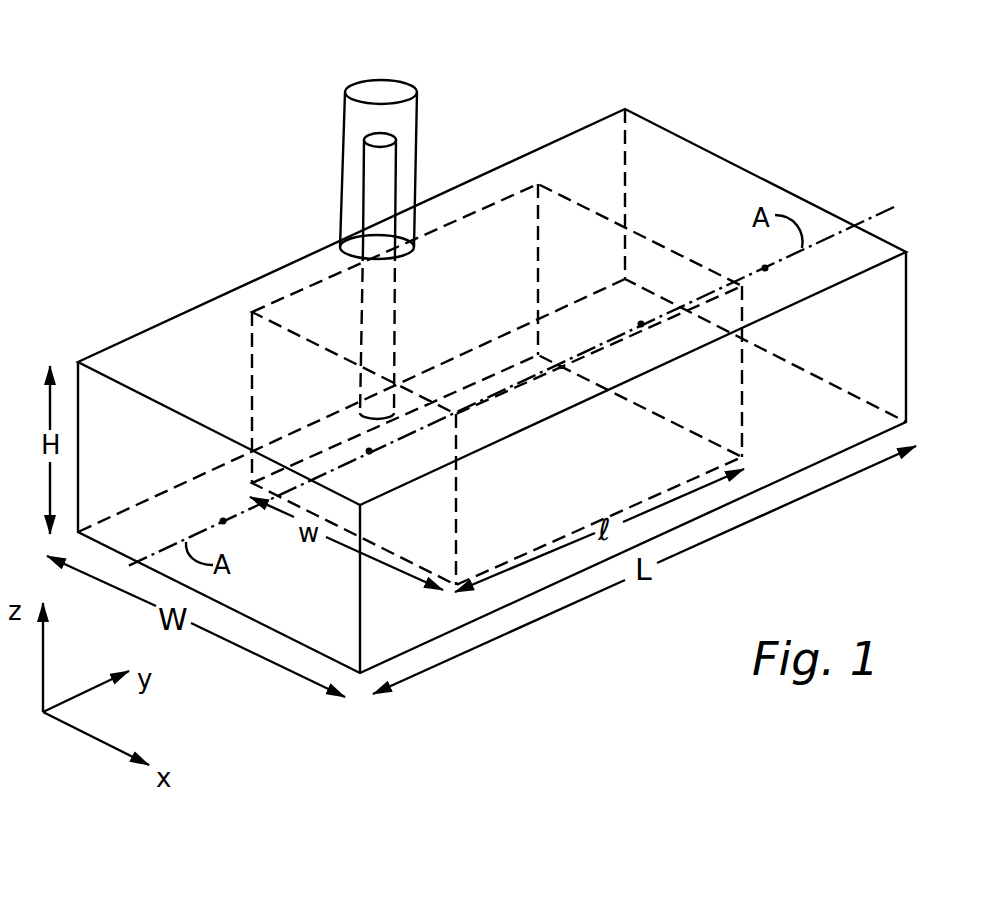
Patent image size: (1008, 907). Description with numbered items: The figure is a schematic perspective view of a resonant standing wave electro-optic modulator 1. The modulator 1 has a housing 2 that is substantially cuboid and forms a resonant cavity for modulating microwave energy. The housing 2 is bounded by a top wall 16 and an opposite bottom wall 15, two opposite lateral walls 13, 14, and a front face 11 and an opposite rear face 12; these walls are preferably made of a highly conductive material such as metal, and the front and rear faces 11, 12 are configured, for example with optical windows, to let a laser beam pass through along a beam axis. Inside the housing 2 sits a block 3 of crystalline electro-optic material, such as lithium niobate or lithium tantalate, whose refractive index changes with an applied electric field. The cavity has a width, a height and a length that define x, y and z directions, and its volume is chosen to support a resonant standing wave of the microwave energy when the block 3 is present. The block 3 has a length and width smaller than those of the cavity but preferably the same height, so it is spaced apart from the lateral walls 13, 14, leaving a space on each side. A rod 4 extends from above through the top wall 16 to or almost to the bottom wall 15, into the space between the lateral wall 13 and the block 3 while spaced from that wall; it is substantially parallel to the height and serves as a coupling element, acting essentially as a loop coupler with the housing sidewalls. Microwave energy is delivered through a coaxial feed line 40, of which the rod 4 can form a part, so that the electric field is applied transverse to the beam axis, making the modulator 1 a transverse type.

The resonant standing wave electro-optic modulator 1 is at (230, 161).
The housing 2 is at (759, 170).
The block of crystalline material 3 is at (506, 252).
The rod 4 is at (384, 172).
The coaxial feed line 40 is at (342, 116).
The front face 11 is at (284, 593).
The rear face 12 is at (853, 223).
The lateral wall 13 is at (147, 328).
The lateral wall 14 is at (797, 432).
The bottom wall 15 is at (455, 628).
The top wall 16 is at (665, 179).